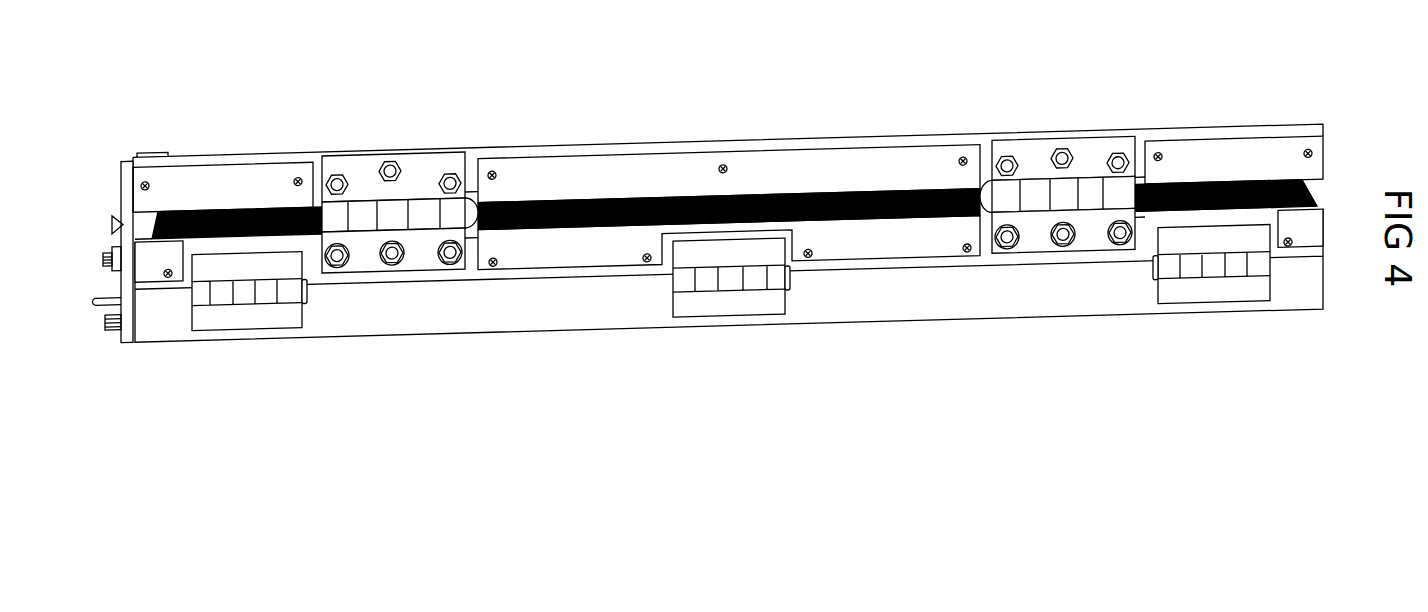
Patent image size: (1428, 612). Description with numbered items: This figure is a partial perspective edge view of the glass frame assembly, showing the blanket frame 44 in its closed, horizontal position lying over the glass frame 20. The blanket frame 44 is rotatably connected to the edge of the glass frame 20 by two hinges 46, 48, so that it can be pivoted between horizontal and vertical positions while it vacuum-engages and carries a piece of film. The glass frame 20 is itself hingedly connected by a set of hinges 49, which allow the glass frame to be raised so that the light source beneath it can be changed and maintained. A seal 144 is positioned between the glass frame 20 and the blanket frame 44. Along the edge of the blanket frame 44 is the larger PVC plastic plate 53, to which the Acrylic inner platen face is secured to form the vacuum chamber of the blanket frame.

The glass frame 20 is at (475, 270).
The blanket frame 44 is at (263, 162).
The hinge 46 is at (1032, 157).
The hinge 48 is at (425, 170).
The hinges 49 is at (255, 318).
The PVC plastic plate 53 is at (591, 126).
The seal 144 is at (1210, 182).